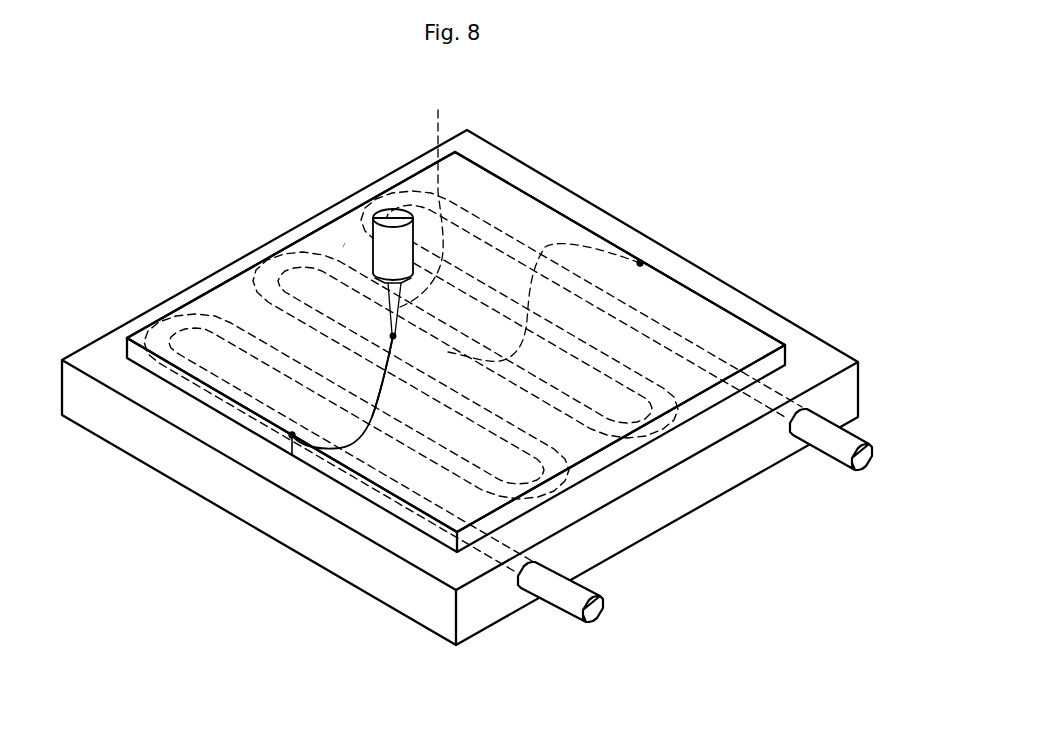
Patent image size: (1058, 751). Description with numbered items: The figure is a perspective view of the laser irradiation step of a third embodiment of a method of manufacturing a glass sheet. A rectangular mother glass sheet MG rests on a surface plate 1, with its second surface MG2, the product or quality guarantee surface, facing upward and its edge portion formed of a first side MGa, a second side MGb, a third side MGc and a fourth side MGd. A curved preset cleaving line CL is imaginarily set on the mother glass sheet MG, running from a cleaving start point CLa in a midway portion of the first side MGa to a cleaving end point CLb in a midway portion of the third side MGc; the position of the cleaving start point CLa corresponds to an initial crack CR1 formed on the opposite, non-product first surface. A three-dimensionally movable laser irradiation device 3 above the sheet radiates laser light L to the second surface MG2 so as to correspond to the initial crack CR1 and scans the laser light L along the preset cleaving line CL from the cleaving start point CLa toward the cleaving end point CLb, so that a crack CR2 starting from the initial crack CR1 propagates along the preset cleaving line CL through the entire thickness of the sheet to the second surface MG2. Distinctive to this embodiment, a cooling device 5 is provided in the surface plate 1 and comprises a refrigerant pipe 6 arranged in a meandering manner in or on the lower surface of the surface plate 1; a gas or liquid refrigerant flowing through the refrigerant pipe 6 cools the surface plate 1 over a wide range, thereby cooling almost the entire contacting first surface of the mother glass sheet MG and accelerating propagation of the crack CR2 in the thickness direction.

The surface plate 1 is at (697, 481).
The laser irradiation device 3 is at (392, 220).
The cooling device 5 is at (517, 424).
The refrigerant pipe 6 is at (840, 443).
The laser light L is at (415, 211).
The spot SP is at (397, 336).
The mother glass sheet MG is at (692, 280).
The second surface MG2 is at (343, 247).
The first side MGa is at (246, 406).
The second side MGb is at (597, 450).
The third side MGc is at (499, 176).
The fourth side MGd is at (215, 287).
The preset cleaving line CL is at (547, 247).
The cleaving start point CLa is at (292, 436).
The cleaving end point CLb is at (640, 263).
The initial crack CR1 is at (292, 455).
The crack CR2 is at (377, 388).